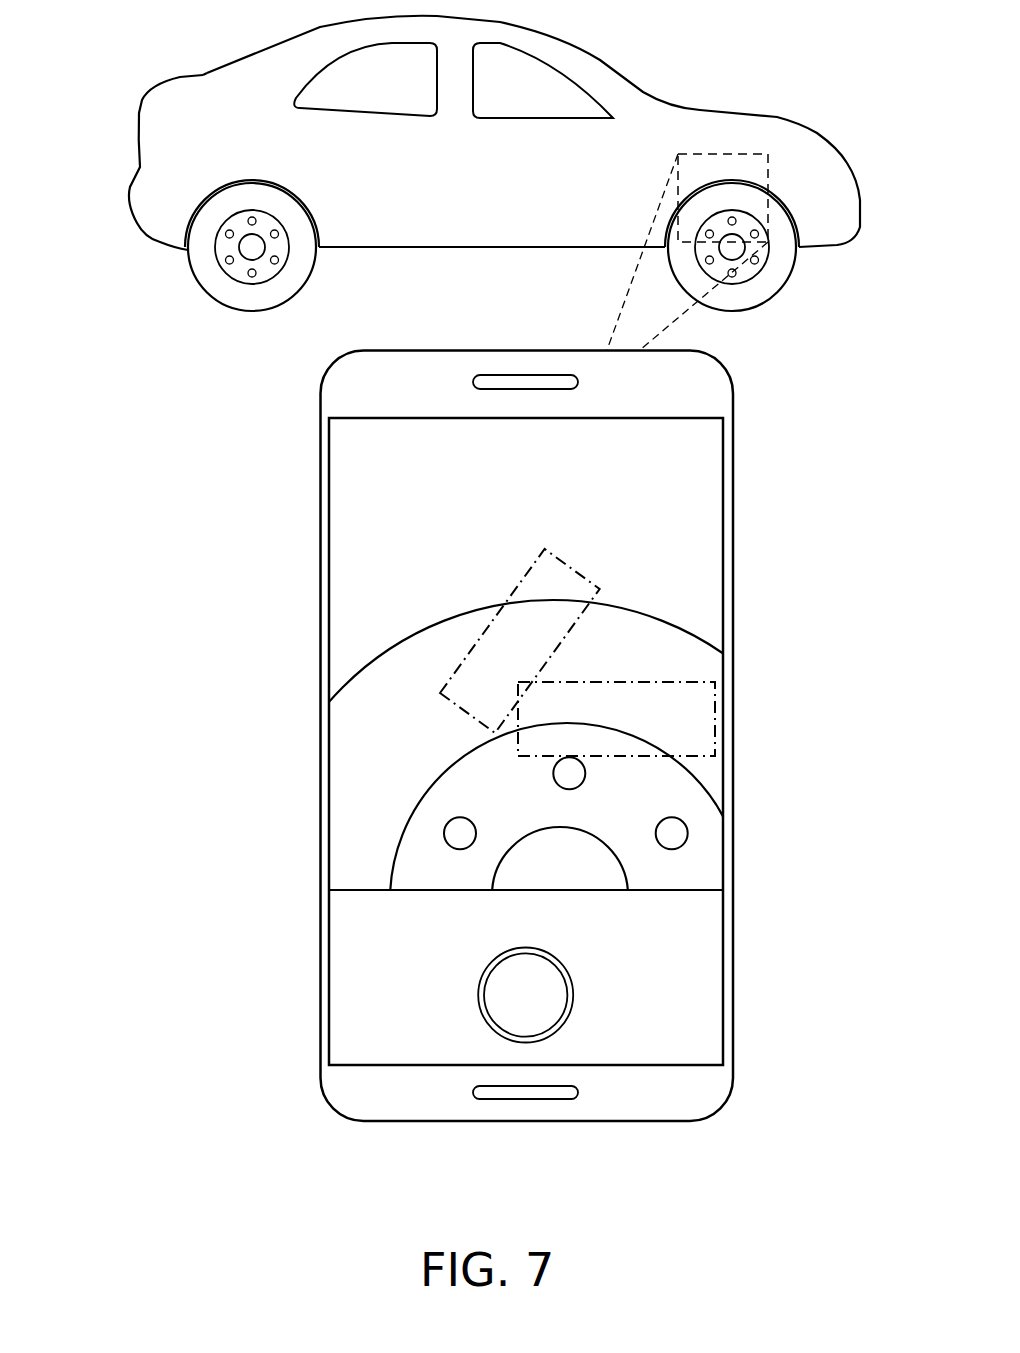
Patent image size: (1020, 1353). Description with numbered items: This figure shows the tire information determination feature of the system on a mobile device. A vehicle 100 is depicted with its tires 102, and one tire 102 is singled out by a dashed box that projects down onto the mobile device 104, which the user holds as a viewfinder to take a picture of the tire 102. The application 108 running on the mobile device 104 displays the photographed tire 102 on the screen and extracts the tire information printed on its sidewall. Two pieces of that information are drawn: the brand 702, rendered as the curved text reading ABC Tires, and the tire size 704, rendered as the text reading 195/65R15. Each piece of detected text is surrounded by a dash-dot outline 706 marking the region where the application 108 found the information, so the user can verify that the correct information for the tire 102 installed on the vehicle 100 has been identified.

The vehicle 100 is at (155, 122).
The tire 102 is at (305, 262).
The mobile device 104 is at (337, 387).
The application 108 is at (393, 477).
The brand 702 is at (357, 813).
The tire size 704 is at (633, 707).
The bounding box 706 is at (715, 683).